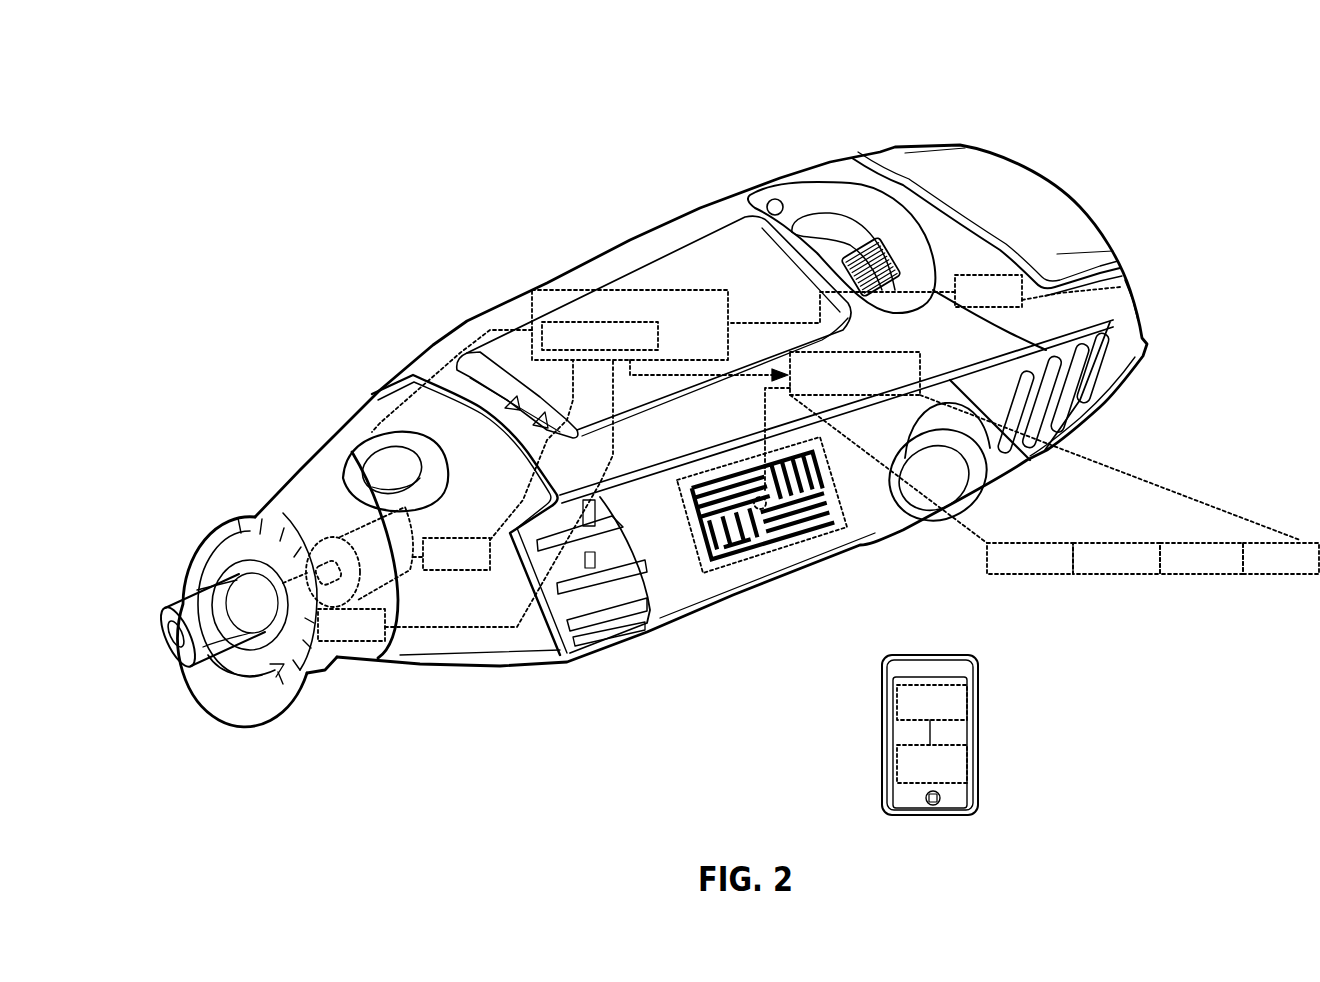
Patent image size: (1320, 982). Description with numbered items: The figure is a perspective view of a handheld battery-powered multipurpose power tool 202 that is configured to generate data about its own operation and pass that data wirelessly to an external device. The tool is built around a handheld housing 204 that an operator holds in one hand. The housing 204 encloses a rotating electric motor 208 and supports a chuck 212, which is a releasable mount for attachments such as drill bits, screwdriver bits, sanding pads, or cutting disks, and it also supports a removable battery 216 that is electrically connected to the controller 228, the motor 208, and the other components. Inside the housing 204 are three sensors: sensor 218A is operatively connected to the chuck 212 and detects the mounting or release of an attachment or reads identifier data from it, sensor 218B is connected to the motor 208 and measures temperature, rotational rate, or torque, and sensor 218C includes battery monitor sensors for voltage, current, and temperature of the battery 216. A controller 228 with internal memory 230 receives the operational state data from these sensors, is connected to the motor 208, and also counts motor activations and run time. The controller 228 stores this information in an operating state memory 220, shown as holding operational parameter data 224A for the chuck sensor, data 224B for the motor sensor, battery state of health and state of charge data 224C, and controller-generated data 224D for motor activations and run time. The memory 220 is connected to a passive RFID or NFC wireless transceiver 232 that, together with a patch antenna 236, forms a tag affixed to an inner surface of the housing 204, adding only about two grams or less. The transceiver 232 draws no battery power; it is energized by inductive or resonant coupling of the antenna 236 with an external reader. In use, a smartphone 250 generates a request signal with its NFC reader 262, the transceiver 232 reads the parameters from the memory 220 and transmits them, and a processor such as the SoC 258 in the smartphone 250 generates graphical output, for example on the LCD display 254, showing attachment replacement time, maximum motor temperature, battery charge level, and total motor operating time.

The power tool 202 is at (336, 195).
The handheld housing 204 is at (483, 316).
The rotating electric motor 208 is at (333, 537).
The chuck 212 is at (227, 587).
The battery 216 is at (1003, 150).
The sensor 218A is at (340, 657).
The sensor 218B is at (462, 537).
The sensor 218C is at (1120, 287).
The operating state memory 220 is at (872, 352).
The operational parameter data 224A is at (1057, 572).
The operational parameter data 224B is at (1143, 572).
The operational state data 224C is at (1229, 572).
The operational state data 224D is at (1311, 572).
The controller 228 is at (640, 290).
The internal memory 230 is at (660, 340).
The wireless transceiver 232 is at (770, 510).
The antenna 236 is at (838, 525).
The smartphone 250 is at (922, 655).
The LCD display 254 is at (917, 808).
The SoC 258 is at (907, 685).
The NFC reader 262 is at (897, 780).